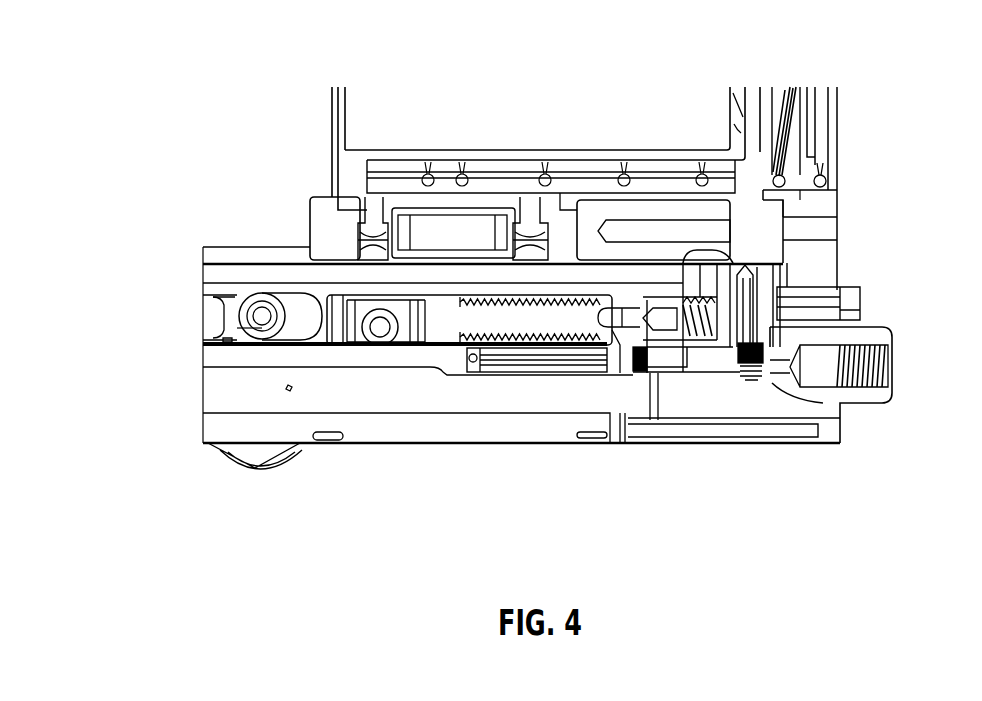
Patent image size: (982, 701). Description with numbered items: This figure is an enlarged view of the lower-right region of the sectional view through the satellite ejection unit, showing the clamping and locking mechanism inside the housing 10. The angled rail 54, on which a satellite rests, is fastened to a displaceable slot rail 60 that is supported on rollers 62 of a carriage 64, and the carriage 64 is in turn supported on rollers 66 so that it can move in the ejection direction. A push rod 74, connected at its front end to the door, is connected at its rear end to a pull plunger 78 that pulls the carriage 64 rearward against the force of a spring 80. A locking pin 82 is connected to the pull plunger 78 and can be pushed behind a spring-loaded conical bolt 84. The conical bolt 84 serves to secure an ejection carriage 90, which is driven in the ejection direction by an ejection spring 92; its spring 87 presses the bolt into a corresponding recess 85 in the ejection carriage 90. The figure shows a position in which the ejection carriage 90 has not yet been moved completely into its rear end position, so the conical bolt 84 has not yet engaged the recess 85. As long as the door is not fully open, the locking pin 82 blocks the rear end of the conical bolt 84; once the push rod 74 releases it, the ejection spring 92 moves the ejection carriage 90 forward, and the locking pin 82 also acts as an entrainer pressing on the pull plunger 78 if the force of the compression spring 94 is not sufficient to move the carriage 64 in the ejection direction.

The housing 10 is at (249, 395).
The angled rail 54 is at (252, 263).
The slot rail 60 is at (237, 293).
The rollers 62 is at (235, 328).
The carriage 64 is at (220, 322).
The rollers 66 is at (360, 357).
The push rod 74 is at (392, 340).
The pull plunger 78 is at (545, 318).
The spring 80 is at (545, 298).
The locking pin 82 is at (710, 373).
The conical bolt 84 is at (775, 327).
The recess 85 is at (748, 225).
The spring 87 is at (768, 373).
The ejection carriage 90 is at (798, 262).
The ejection spring 92 is at (786, 95).
The compression spring 94 is at (717, 300).